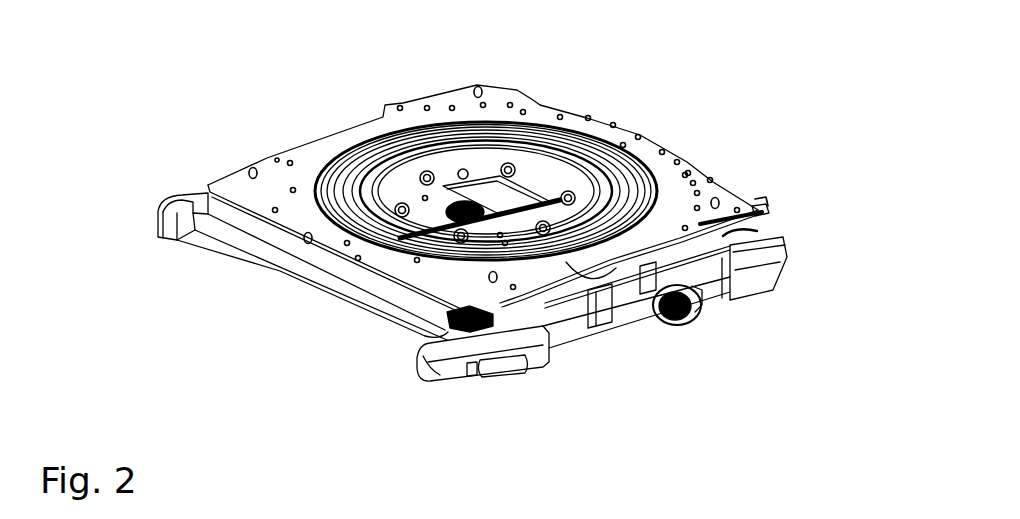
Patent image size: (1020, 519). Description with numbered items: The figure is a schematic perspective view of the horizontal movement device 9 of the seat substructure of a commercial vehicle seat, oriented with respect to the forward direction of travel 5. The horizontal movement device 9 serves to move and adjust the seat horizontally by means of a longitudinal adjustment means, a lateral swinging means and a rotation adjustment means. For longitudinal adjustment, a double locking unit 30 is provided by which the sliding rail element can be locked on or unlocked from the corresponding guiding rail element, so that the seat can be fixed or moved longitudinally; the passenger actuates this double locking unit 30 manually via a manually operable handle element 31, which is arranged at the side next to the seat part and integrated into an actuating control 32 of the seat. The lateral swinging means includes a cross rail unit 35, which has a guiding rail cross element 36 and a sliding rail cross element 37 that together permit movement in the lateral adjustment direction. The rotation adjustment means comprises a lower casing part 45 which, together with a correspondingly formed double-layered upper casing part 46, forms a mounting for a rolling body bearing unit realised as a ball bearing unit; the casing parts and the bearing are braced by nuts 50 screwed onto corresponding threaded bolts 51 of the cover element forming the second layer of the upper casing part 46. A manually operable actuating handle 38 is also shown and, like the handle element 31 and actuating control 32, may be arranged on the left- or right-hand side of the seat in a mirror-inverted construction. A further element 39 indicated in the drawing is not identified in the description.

The forward direction of travel 5 is at (273, 320).
The horizontal movement device 9 is at (217, 367).
The double locking unit 30 is at (145, 200).
The manually operable handle element 31 is at (470, 367).
The actuating control 32 is at (838, 248).
The cross rail unit 35 is at (769, 208).
The guiding rail cross element 36 is at (750, 234).
The sliding rail cross element 37 is at (760, 203).
The manually operable actuating handle 38 is at (695, 310).
The actuation direction 39 is at (677, 337).
The lower casing part 45 is at (577, 283).
The double-layered upper casing part 46 is at (498, 100).
The nuts 50 is at (418, 168).
The threaded bolts 51 is at (430, 172).